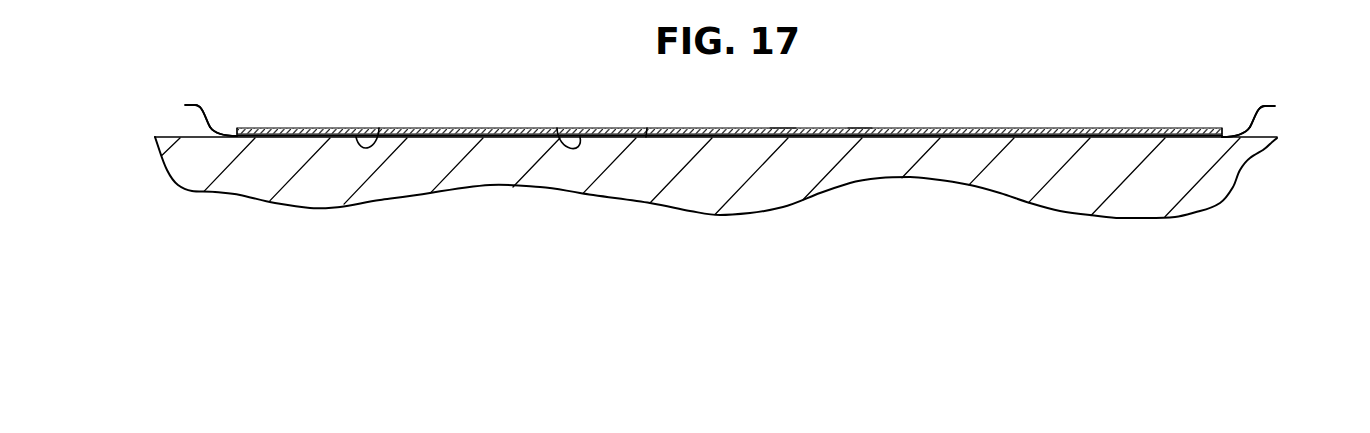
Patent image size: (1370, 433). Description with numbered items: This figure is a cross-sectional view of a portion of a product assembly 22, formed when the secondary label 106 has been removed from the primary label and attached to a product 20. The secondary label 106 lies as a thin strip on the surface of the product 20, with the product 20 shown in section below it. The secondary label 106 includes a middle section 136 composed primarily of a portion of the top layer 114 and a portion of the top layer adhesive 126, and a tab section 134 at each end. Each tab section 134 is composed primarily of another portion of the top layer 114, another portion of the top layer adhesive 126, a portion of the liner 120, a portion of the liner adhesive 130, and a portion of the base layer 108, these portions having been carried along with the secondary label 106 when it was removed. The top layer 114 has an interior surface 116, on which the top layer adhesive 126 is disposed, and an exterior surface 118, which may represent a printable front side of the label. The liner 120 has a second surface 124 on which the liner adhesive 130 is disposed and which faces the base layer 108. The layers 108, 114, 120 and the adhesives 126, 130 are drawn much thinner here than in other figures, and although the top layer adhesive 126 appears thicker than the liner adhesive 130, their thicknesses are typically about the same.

The product assembly 22 is at (731, 123).
The product 20 is at (770, 195).
The secondary label 106 is at (962, 129).
The tab section 134 is at (255, 129).
The second surface 124 is at (379, 128).
The interior surface 116 is at (557, 128).
The middle section 136 is at (647, 128).
The top layer adhesive 126 is at (646, 137).
The top layer 114 is at (783, 128).
The exterior surface 118 is at (860, 128).
The liner 120 is at (177, 131).
The liner adhesive 130 is at (731, 111).
The base layer 108 is at (731, 126).